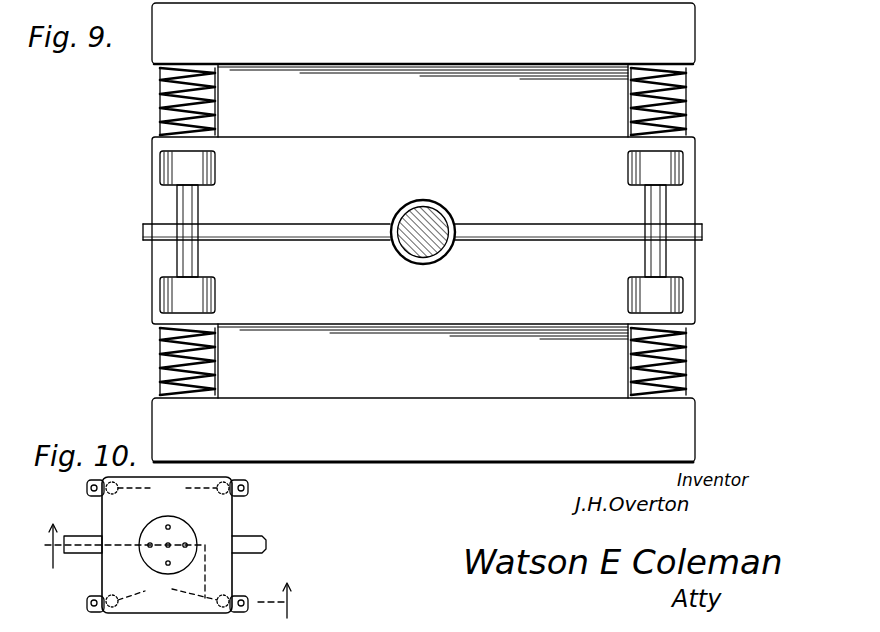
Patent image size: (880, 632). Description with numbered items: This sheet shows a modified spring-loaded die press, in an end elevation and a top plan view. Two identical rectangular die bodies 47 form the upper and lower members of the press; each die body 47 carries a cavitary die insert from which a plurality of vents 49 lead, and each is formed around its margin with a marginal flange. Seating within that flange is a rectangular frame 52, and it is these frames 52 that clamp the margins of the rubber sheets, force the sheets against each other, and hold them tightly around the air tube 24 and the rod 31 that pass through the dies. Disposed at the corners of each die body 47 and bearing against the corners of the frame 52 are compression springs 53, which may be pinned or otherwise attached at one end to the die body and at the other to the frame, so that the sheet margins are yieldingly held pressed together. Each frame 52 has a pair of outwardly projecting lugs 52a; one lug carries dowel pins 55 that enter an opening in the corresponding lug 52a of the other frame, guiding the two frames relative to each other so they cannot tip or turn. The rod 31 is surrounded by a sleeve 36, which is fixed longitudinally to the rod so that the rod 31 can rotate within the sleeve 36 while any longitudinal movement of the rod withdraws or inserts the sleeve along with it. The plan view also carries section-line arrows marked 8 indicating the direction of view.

In FIG. 9, the die body 47 is at (423, 232).
In FIG. 10, the die body 47 is at (152, 527).
In FIG. 9, the frame 52 is at (392, 147).
In FIG. 9, the outwardly projecting lug 52a is at (714, 290).
In FIG. 10, the outwardly projecting lug 52a is at (248, 488).
In FIG. 9, the compression spring 53 is at (160, 104).
In FIG. 10, the compression spring 53 is at (167, 543).
In FIG. 9, the dowel pin 55 is at (185, 203).
In FIG. 9, the rod 31 is at (445, 210).
In FIG. 10, the rod 31 is at (262, 539).
In FIG. 9, the sleeve 36 is at (405, 212).
In FIG. 10, the vent 49 is at (186, 544).
In FIG. 10, the air tube 24 is at (77, 537).
In FIG. 10, the section line 8 is at (167, 571).